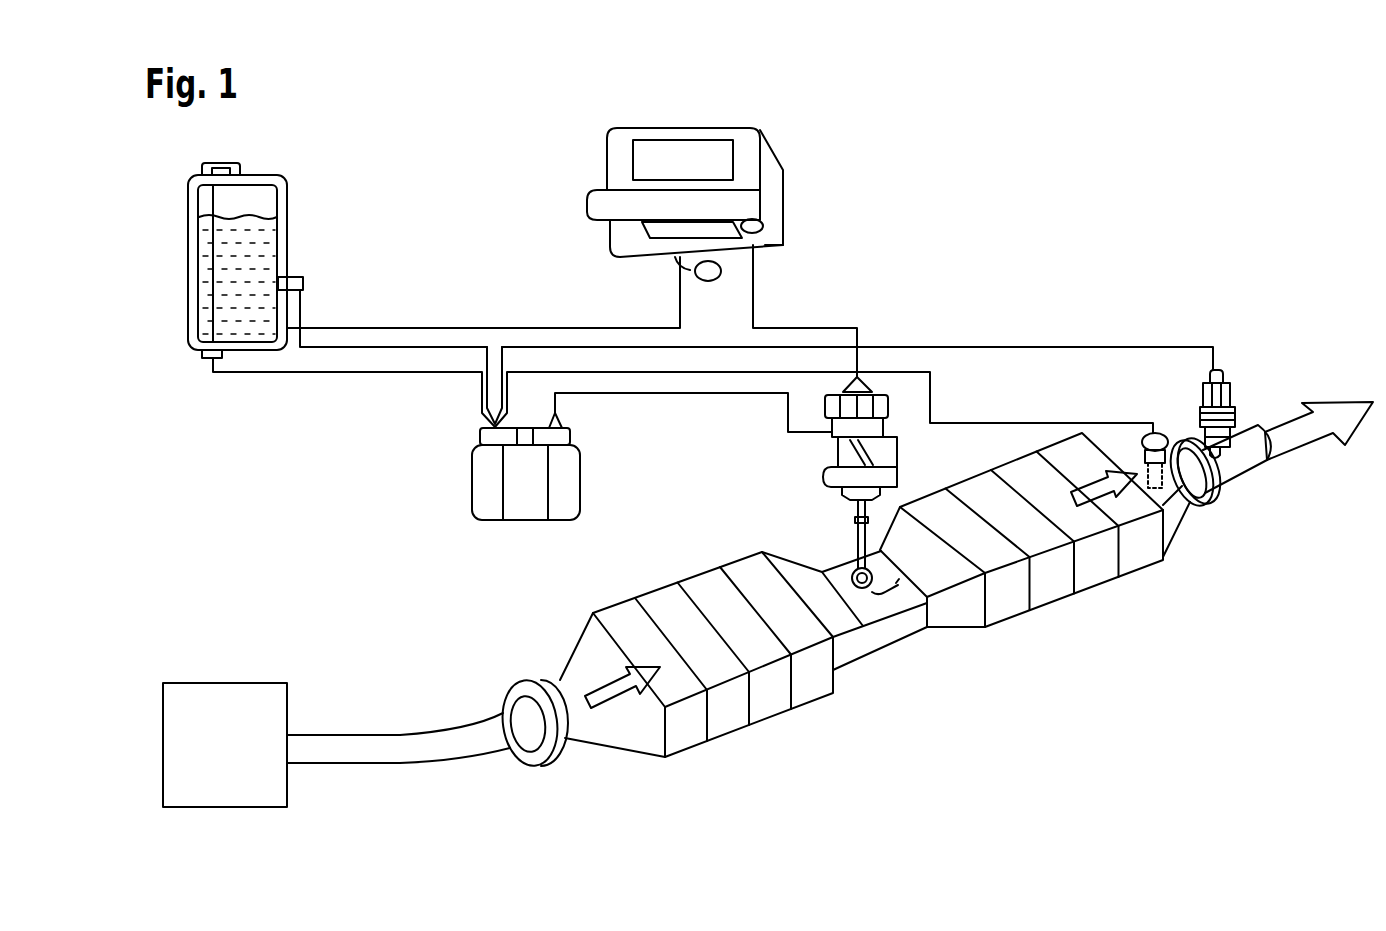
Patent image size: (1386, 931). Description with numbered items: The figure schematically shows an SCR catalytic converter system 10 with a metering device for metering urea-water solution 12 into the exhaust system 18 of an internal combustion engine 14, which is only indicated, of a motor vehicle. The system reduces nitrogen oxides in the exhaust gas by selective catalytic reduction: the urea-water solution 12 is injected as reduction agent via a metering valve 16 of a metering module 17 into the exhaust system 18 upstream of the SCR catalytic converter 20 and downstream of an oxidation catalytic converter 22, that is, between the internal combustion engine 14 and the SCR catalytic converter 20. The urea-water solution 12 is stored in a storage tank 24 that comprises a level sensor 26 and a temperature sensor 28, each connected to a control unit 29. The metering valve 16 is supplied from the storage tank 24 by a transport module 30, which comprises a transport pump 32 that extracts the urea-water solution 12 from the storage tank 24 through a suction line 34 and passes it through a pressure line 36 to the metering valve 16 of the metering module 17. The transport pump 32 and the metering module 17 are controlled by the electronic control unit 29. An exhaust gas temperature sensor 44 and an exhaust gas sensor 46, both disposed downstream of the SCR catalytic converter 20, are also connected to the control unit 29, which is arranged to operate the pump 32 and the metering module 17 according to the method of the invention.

The SCR catalytic converter system 10 is at (1190, 148).
The urea-water solution 12 is at (263, 247).
The internal combustion engine 14 is at (222, 682).
The metering valve 16 is at (855, 537).
The metering module 17 is at (825, 475).
The exhaust system 18 is at (897, 630).
The SCR catalytic converter 20 is at (1095, 572).
The oxidation catalytic converter 22 is at (768, 698).
The storage tank 24 is at (290, 195).
The level sensor 26 is at (202, 356).
The temperature sensor 28 is at (303, 287).
The control unit 29 is at (523, 503).
The transport module 30 is at (720, 177).
The transport pump 32 is at (687, 160).
The suction line 34 is at (451, 327).
The pressure line 36 is at (838, 328).
The exhaust gas temperature sensor 44 is at (1168, 435).
The exhaust gas sensor 46 is at (1232, 407).